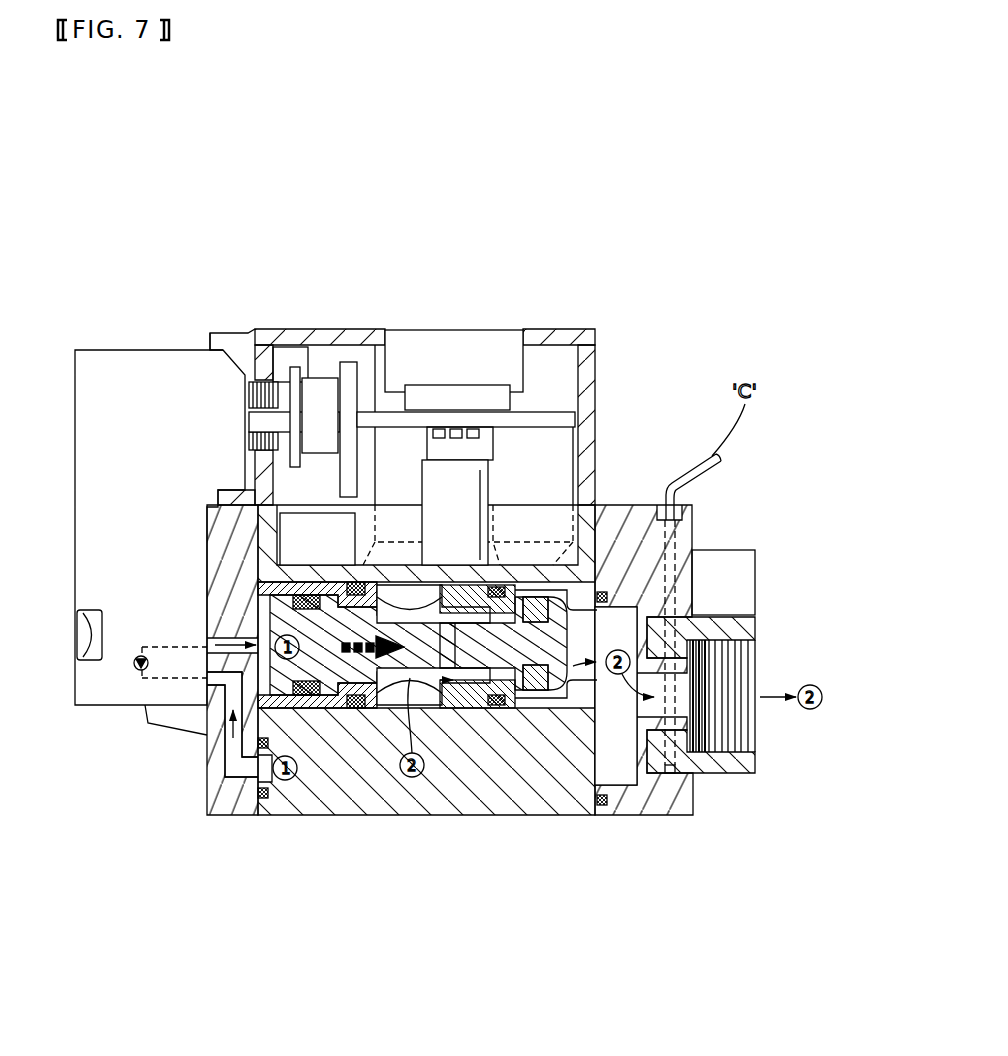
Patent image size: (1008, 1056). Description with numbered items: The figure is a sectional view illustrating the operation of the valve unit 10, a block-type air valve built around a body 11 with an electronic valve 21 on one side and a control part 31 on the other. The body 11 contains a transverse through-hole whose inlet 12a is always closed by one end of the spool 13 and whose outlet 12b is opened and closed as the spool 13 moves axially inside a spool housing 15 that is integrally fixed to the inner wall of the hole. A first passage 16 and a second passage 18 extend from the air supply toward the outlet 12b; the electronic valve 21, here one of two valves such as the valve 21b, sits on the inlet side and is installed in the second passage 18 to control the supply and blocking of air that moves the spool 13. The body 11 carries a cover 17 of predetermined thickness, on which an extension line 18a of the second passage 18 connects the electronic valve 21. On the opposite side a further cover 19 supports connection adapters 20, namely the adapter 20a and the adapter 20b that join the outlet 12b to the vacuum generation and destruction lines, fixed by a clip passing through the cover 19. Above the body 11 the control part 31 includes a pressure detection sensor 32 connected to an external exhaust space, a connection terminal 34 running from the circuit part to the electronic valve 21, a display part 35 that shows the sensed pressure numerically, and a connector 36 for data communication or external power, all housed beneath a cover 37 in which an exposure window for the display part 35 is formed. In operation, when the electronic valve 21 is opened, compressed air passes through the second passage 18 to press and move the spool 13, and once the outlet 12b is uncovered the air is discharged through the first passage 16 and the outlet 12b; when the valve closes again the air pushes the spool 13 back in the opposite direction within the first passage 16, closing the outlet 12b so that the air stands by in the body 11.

The valve unit 10 is at (595, 180).
The body 11 is at (372, 828).
The inlet 12a is at (260, 584).
The outlet 12b is at (621, 680).
The spool 13 is at (472, 652).
The spool housing 15 is at (320, 708).
The first passage 16 is at (455, 695).
The cover 17 is at (220, 792).
The second passage 18 is at (253, 782).
The extension line 18a is at (228, 748).
The cover 19 is at (680, 808).
The connection adapter 20 is at (759, 644).
The connection adapter 20a is at (735, 550).
The connection adapter 20b is at (750, 760).
The electronic valve 21 is at (103, 328).
The electronic valve 21b is at (163, 347).
The control part 31 is at (542, 362).
The pressure detection sensor 32 is at (500, 445).
The connection terminal 34 is at (310, 388).
The display part 35 is at (455, 329).
The connector 36 is at (263, 355).
The cover 37 is at (595, 360).